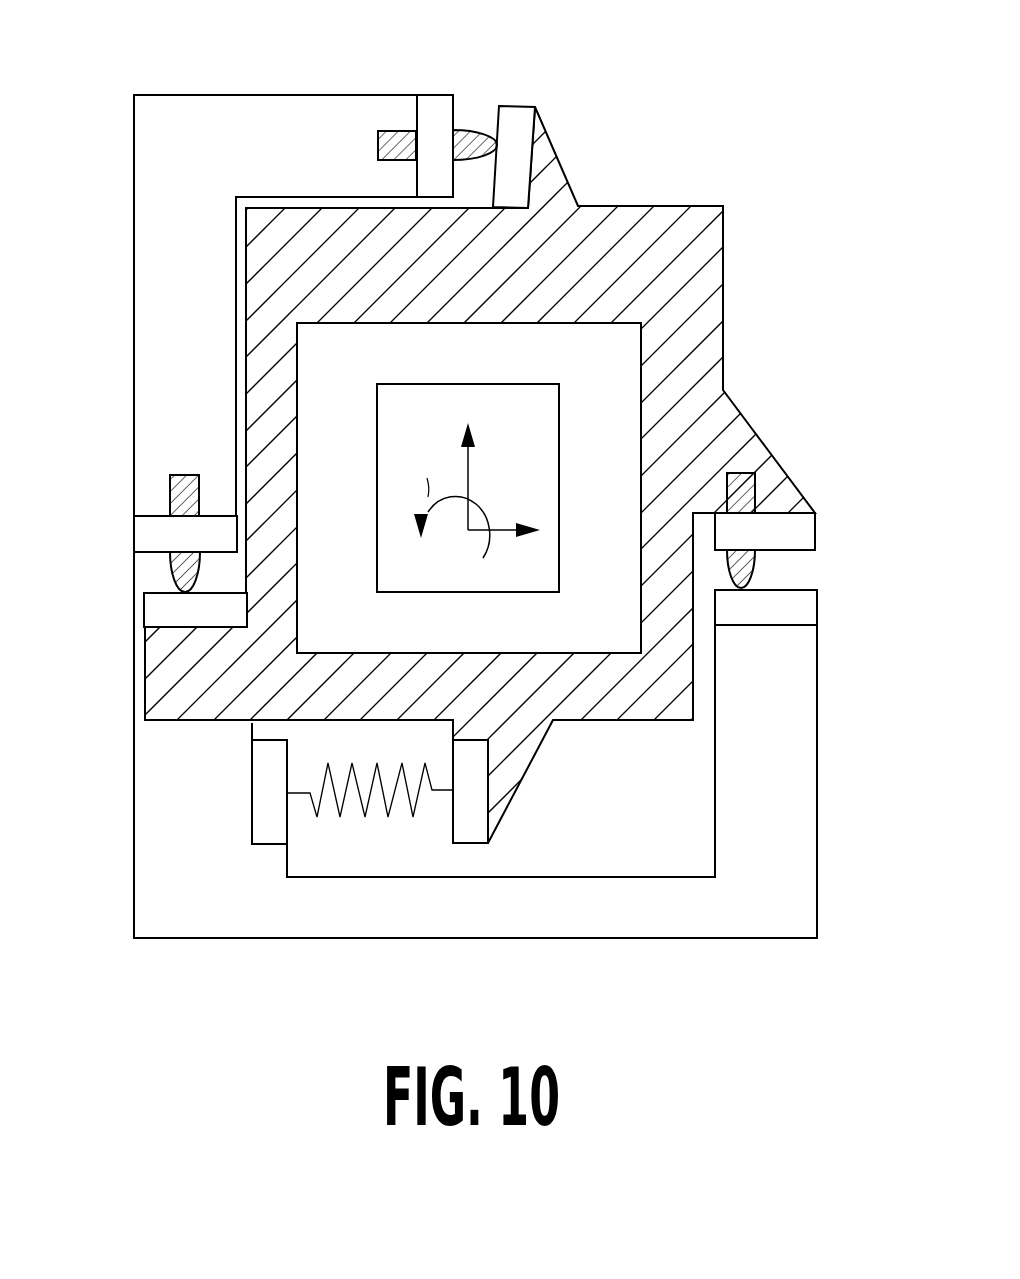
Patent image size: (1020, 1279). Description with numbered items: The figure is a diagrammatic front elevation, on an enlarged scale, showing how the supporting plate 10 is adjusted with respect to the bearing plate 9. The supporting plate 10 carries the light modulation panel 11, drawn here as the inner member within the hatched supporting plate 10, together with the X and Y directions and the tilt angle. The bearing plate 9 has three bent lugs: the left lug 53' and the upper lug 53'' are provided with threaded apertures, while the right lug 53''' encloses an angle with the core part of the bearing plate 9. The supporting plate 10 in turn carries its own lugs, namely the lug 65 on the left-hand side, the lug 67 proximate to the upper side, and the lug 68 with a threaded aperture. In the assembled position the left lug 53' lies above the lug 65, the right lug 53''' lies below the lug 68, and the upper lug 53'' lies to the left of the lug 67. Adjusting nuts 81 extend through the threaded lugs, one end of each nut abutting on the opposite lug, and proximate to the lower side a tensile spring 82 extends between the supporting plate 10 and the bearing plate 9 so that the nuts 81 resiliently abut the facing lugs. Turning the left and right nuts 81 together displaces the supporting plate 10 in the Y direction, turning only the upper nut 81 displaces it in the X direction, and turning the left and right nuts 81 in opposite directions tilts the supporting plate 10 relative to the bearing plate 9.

The bearing plate 9 is at (157, 252).
The supporting plate 10 is at (703, 358).
The light modulation panel 11 is at (613, 340).
The upper lug 53'' is at (431, 98).
The left lug 53' is at (146, 535).
The right lug 53''' is at (813, 612).
The lug 65 is at (155, 613).
The lug 67 is at (520, 122).
The lug 68 is at (805, 533).
The adjusting nuts 81 is at (480, 132).
The tensile spring 82 is at (365, 817).